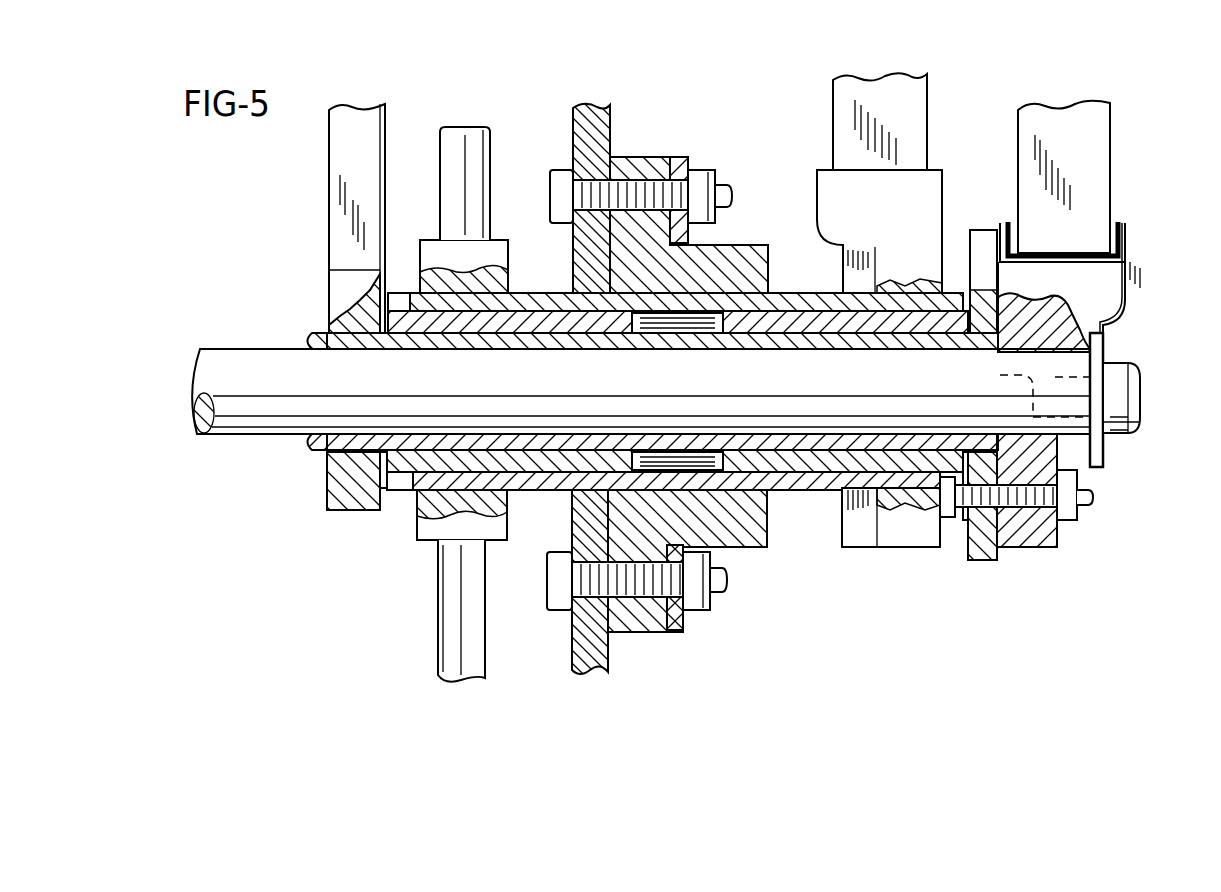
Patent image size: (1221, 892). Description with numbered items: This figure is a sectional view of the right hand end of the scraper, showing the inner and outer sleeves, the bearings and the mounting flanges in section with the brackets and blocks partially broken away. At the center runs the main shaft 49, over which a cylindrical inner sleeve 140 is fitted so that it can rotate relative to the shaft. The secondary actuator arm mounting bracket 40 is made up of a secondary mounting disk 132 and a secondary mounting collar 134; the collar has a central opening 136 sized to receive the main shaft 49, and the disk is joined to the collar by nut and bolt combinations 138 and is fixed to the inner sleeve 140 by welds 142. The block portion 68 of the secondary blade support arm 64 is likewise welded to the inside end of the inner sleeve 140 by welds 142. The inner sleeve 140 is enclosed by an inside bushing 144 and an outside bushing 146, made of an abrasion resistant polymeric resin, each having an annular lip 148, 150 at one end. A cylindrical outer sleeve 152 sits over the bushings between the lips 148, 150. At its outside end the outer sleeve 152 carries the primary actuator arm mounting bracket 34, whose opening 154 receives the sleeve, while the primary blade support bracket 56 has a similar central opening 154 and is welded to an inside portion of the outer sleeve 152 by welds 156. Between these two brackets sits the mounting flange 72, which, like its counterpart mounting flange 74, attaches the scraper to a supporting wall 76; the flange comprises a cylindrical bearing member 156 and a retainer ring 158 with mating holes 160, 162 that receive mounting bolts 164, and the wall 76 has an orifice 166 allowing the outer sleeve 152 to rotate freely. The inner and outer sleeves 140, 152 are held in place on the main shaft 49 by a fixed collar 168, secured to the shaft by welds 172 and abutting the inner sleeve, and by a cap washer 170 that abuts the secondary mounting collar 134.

The primary actuator arm mounting bracket 34 is at (935, 194).
The secondary actuator arm mounting bracket 40 is at (1132, 277).
The main shaft 49 is at (1031, 390).
The primary blade support bracket 56 is at (502, 253).
The secondary blade support arm 64 is at (338, 228).
The block portion 68 is at (335, 488).
The mounting flange 72 is at (628, 132).
The mounting flange 74 is at (1130, 395).
The supporting wall 76 is at (578, 640).
The secondary mounting disk 132 is at (985, 233).
The secondary mounting collar 134 is at (1112, 310).
The central opening 136 is at (1105, 358).
The nut and bolt combinations 138 is at (1033, 308).
The inner sleeve 140 is at (872, 440).
The welds 142 is at (410, 320).
The inside bushing 144 is at (413, 457).
The outside bushing 146 is at (824, 438).
The annular lip 148 is at (400, 292).
The annular lip 150 is at (950, 505).
The outer sleeve 152 is at (795, 293).
The opening 154 is at (482, 295).
The cylindrical bearing member 156 is at (513, 293).
The retainer ring 158 is at (672, 630).
The holes 160 is at (650, 178).
The holes 162 is at (678, 158).
The mounting bolts 164 is at (718, 177).
The orifice 166 is at (567, 497).
The fixed collar 168 is at (310, 440).
The cap washer 170 is at (1103, 455).
The welds 172 is at (307, 342).